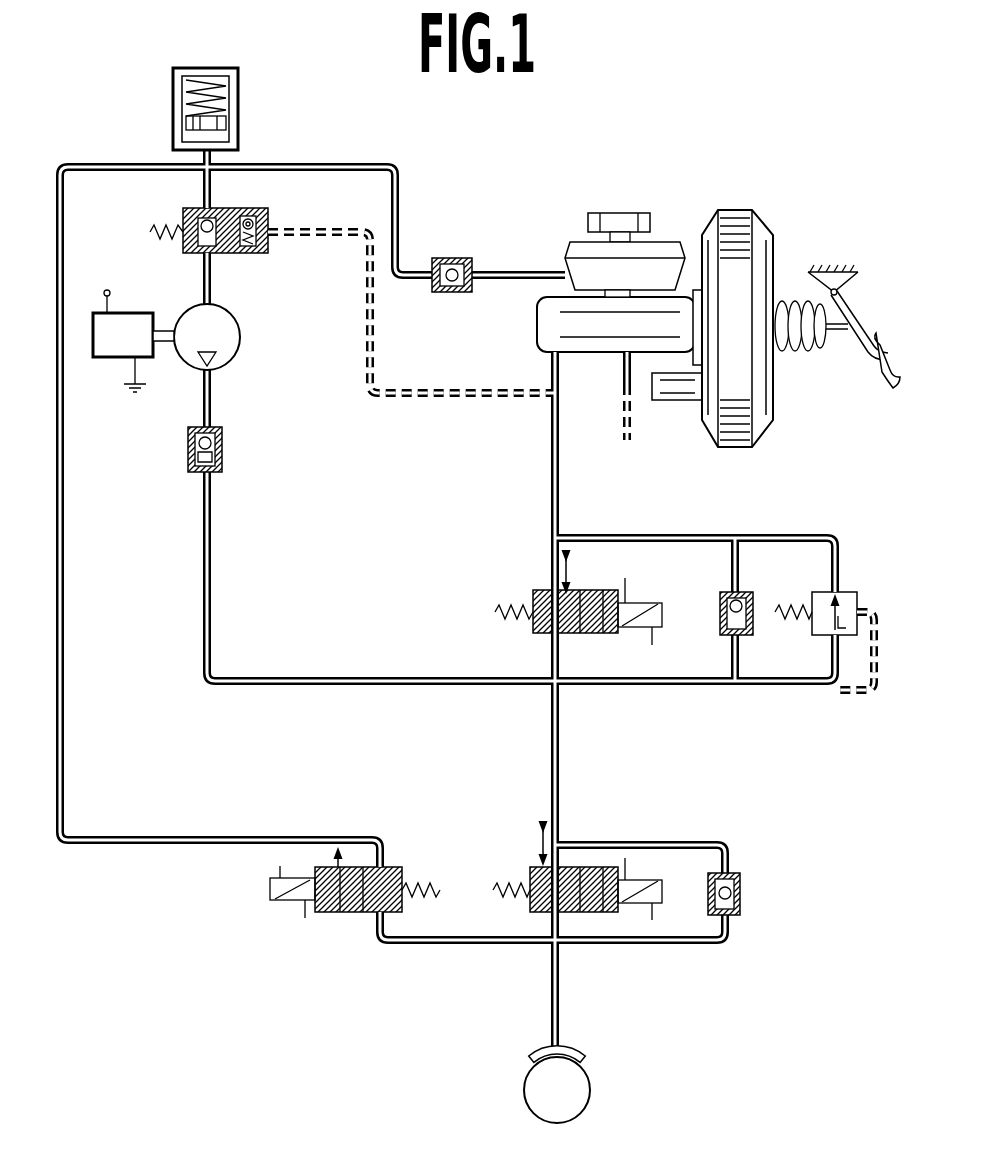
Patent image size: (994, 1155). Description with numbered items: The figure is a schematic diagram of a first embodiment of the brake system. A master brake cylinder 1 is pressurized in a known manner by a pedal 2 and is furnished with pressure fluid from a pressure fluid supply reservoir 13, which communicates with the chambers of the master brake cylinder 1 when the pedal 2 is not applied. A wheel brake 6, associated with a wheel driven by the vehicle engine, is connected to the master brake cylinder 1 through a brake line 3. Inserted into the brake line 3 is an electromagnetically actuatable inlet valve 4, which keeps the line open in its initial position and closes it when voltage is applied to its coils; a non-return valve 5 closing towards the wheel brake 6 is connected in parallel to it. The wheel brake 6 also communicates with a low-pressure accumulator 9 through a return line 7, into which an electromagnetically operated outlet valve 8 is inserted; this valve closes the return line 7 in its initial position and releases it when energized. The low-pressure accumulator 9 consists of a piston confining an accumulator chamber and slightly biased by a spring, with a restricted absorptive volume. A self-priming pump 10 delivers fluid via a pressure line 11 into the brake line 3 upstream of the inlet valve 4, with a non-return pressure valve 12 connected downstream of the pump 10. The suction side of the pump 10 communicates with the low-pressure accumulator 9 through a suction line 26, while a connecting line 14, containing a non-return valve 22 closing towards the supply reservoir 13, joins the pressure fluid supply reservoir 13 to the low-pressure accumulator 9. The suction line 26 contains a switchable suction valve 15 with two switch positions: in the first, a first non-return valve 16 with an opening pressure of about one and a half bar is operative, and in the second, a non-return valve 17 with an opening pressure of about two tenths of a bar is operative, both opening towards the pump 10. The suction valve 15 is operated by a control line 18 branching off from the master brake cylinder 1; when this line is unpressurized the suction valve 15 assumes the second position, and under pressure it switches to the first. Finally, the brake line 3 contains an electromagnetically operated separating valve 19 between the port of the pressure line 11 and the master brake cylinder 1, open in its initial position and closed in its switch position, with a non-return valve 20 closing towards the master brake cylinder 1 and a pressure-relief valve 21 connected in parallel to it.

The master brake cylinder 1 is at (610, 355).
The pedal 2 is at (893, 378).
The brake line 3 is at (562, 448).
The inlet valve 4 is at (527, 870).
The non-return valve 5 is at (742, 890).
The wheel brake 6 is at (583, 1097).
The return line 7 is at (221, 840).
The outlet valve 8 is at (412, 858).
The low-pressure accumulator 9 is at (238, 96).
The pump 10 is at (228, 324).
The pressure line 11 is at (405, 681).
The non-return pressure valve 12 is at (222, 454).
The pressure fluid supply reservoir 13 is at (580, 246).
The connecting line 14 is at (530, 274).
The suction valve 15 is at (272, 252).
The first non-return valve 16 is at (256, 222).
The non-return valve 17 is at (186, 212).
The control line 18 is at (370, 374).
The separating valve 19 is at (608, 633).
The non-return valve 20 is at (720, 606).
The pressure-relief valve 21 is at (866, 690).
The non-return valve 22 is at (452, 258).
The suction line 26 is at (210, 190).